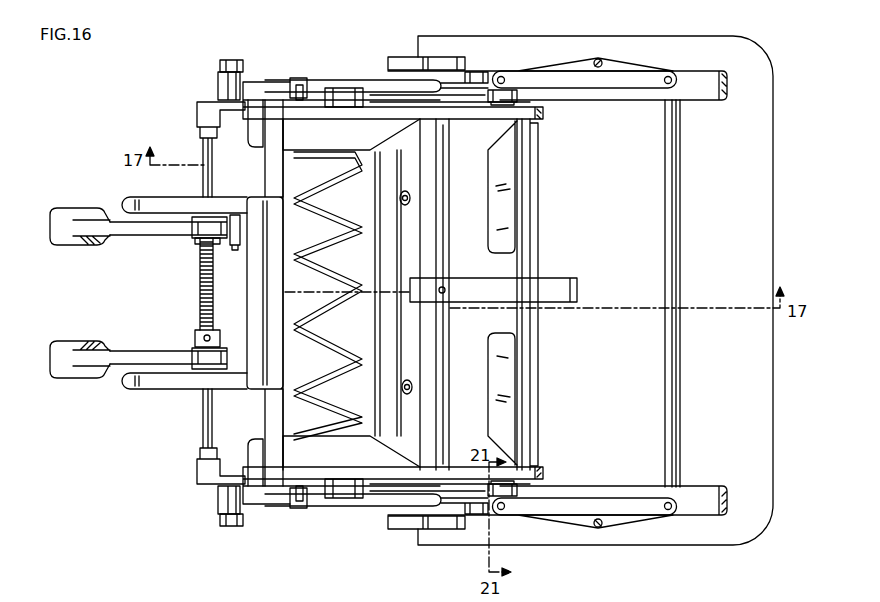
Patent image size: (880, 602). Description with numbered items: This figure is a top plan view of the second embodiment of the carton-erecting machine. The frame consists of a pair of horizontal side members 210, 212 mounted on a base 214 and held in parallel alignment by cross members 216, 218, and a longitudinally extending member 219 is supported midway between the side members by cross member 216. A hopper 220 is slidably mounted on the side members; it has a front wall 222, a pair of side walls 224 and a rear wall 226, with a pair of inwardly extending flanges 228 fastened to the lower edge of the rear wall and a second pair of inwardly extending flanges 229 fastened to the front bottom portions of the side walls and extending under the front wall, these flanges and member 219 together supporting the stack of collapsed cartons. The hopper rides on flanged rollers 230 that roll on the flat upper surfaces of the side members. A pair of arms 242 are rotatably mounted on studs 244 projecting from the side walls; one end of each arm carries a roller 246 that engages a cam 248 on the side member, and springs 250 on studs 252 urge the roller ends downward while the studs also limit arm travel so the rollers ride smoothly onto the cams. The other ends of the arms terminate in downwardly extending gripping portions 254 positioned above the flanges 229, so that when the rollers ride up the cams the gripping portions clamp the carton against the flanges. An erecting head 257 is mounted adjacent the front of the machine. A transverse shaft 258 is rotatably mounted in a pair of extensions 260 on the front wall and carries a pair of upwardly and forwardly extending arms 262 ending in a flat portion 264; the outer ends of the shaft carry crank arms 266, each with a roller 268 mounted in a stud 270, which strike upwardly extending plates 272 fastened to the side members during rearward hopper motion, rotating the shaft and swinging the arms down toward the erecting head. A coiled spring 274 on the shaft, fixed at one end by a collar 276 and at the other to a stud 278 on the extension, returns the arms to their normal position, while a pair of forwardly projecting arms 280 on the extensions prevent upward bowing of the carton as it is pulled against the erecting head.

The side member 210 is at (712, 514).
The side member 212 is at (693, 76).
The base 214 is at (733, 165).
The cross member 216 is at (450, 223).
The cross member 218 is at (680, 268).
The longitudinally extending member 219 is at (558, 280).
The hopper 220 is at (532, 152).
The front wall 222 is at (277, 172).
The side walls 224 is at (477, 118).
The rear wall 226 is at (530, 388).
The inwardly extending flanges 228 is at (489, 240).
The inwardly extending flanges 229 is at (347, 145).
The flanged rollers 230 is at (523, 95).
The arms 242 is at (316, 82).
The studs 244 is at (338, 88).
The rollers 246 is at (473, 72).
The cams 248 is at (640, 84).
The springs 250 is at (298, 78).
The studs 252 is at (296, 80).
The gripping portions 254 is at (247, 133).
The erecting head 257 is at (335, 257).
The transverse shaft 258 is at (203, 298).
The extensions 260 is at (197, 197).
The arms 262 is at (137, 230).
The flat portion 264 is at (63, 243).
The crank arms 266 is at (197, 107).
The roller 268 is at (227, 60).
The stud 270 is at (222, 90).
The upwardly extending plates 272 is at (402, 58).
The coiled spring 274 is at (212, 279).
The collar 276 is at (196, 336).
The stud 278 is at (205, 252).
The forwardly projecting arms 280 is at (136, 197).